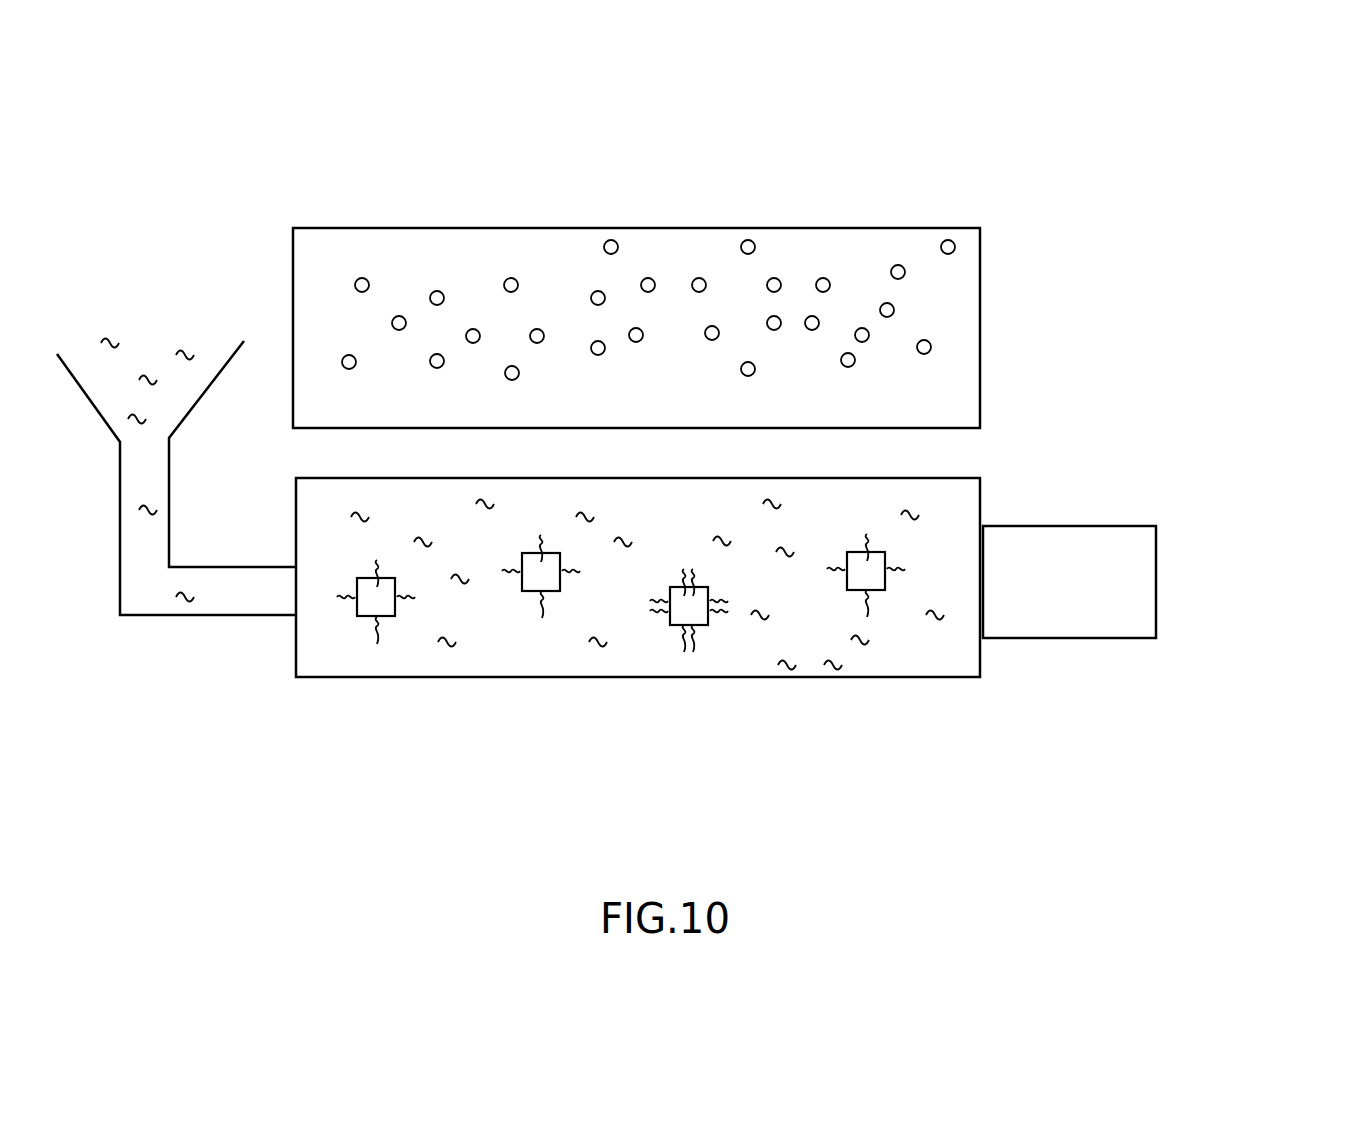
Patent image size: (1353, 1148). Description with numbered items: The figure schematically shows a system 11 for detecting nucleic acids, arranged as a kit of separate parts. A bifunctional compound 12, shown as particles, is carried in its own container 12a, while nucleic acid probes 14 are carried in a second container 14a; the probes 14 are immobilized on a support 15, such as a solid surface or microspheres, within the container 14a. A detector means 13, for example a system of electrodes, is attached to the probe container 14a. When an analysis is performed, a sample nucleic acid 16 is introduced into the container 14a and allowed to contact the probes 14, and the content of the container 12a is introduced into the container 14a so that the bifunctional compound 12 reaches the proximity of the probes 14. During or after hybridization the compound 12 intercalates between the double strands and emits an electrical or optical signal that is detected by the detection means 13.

The system for detecting nucleic acids 11 is at (1082, 220).
The bifunctional compound 12 is at (382, 277).
The container 12a is at (722, 223).
The detection means 13 is at (1142, 573).
The nucleic acid probes 14 is at (543, 620).
The container 14a is at (982, 512).
The support 15 is at (883, 593).
The sample nucleic acid 16 is at (753, 623).